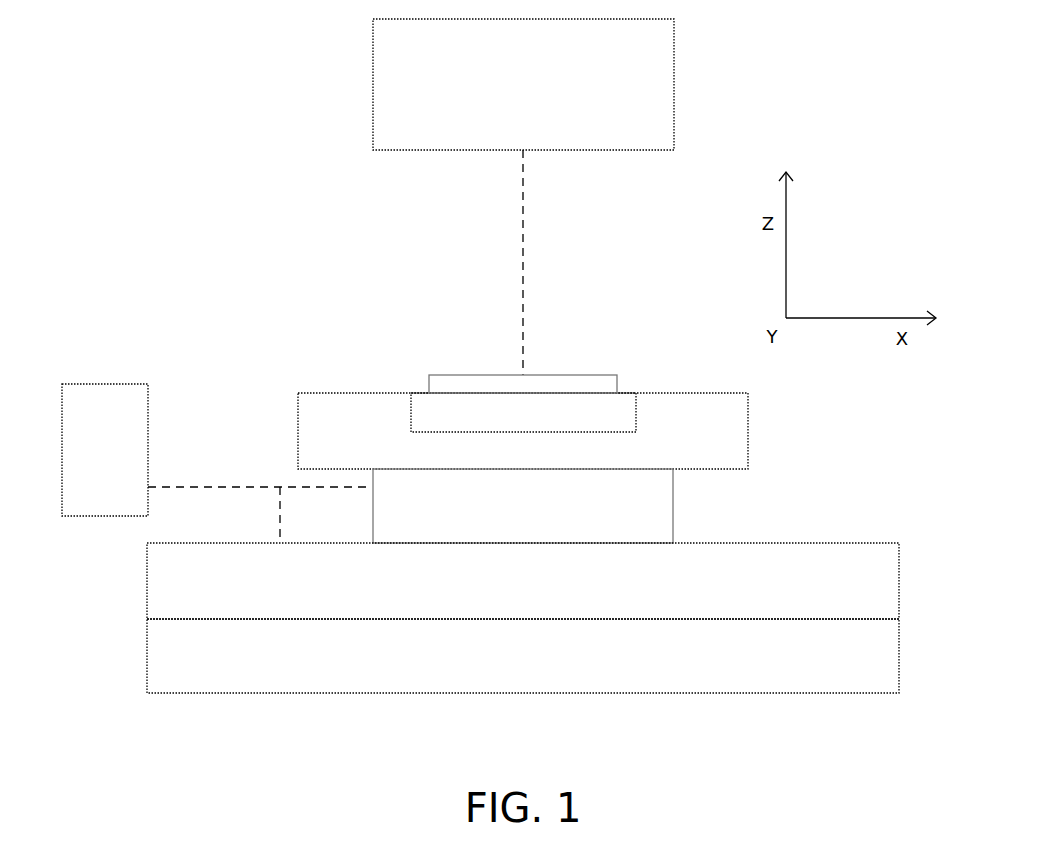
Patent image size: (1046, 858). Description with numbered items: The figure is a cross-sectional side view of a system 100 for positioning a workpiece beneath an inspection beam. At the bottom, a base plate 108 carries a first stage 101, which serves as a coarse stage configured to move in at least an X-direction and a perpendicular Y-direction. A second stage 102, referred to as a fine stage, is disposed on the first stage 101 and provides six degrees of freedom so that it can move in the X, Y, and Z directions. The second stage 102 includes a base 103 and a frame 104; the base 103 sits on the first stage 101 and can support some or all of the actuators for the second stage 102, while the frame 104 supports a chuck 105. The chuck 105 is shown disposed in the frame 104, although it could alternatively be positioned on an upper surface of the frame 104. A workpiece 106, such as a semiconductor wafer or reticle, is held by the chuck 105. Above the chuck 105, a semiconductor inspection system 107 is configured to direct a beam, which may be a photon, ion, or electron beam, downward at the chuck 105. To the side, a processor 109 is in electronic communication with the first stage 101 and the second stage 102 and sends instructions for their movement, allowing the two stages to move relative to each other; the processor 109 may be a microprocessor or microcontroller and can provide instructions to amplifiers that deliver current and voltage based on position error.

The system 100 is at (228, 281).
The first stage 101 is at (523, 581).
The second stage 102 is at (786, 479).
The base 103 is at (523, 506).
The frame 104 is at (298, 433).
The chuck 105 is at (625, 393).
The workpiece 106 is at (438, 375).
The semiconductor inspection system 107 is at (523, 84).
The base plate 108 is at (523, 656).
The processor 109 is at (105, 450).